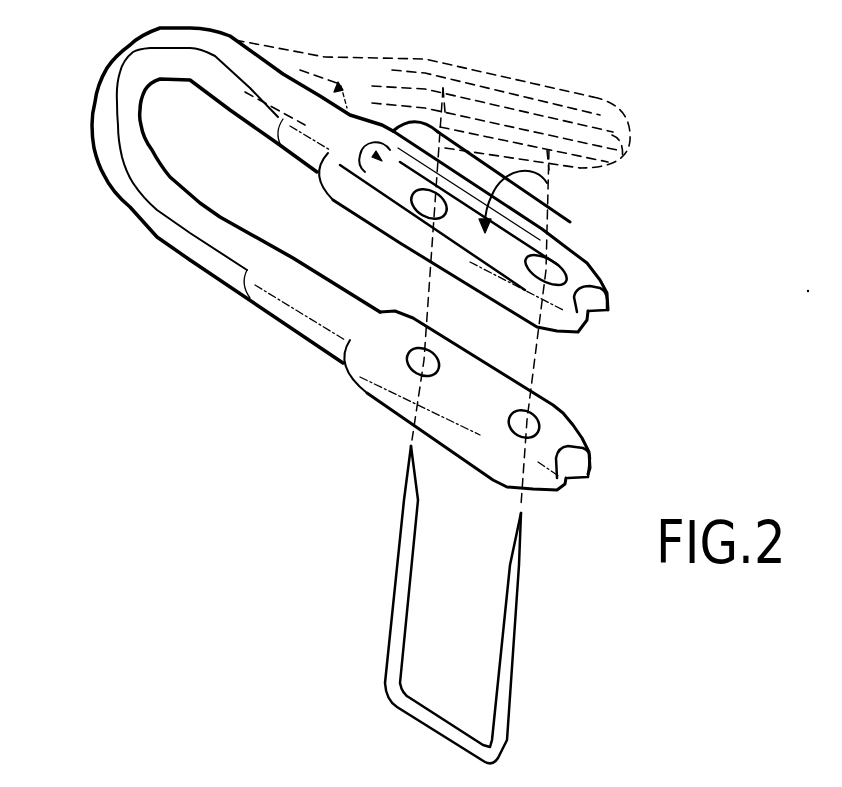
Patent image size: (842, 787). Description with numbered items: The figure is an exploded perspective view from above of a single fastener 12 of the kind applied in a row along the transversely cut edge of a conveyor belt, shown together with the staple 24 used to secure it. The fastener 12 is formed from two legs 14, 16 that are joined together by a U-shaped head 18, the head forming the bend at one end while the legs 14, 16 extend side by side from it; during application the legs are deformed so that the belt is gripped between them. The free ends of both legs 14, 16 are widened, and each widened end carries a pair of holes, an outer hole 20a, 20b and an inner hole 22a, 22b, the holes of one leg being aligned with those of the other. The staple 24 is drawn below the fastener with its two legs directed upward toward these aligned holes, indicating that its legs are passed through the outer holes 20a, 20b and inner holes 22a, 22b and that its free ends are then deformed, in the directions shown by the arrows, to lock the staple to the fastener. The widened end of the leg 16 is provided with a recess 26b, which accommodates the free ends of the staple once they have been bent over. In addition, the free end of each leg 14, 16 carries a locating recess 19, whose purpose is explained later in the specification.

The fastener 12 is at (108, 212).
The leg 14 is at (292, 334).
The leg 16 is at (352, 112).
The U-shaped head 18 is at (93, 126).
The locating recess 19 is at (596, 315).
The outer hole 20a is at (548, 415).
The outer hole 20b is at (580, 265).
The inner hole 22a is at (367, 382).
The inner hole 22b is at (390, 193).
The staple 24 is at (522, 552).
The recess 26b is at (548, 232).